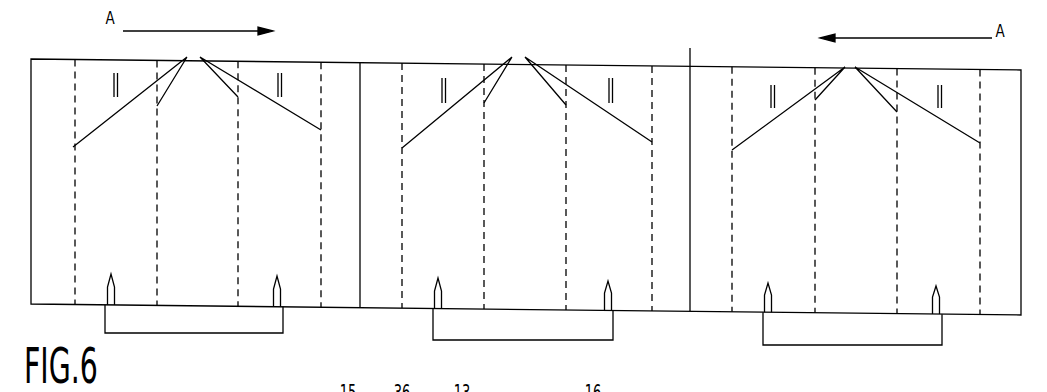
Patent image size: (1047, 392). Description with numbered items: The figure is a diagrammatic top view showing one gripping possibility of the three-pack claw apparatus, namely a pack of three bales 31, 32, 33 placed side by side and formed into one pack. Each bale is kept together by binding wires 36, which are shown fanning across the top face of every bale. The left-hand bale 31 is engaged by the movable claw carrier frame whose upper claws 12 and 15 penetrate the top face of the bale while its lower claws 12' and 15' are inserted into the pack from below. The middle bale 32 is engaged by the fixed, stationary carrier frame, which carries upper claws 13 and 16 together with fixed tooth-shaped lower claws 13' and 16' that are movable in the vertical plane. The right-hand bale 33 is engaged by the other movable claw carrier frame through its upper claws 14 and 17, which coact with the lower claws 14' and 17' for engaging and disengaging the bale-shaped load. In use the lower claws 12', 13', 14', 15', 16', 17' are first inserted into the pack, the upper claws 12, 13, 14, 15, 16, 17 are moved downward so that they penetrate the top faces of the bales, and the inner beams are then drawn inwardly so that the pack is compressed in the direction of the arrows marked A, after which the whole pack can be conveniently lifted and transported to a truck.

The upper claw 12 is at (102, 66).
The upper claw 13 is at (434, 62).
The upper claw 14 is at (782, 62).
The upper claw 15 is at (268, 66).
The upper claw 16 is at (623, 61).
The upper claw 17 is at (954, 77).
The bale 31 is at (183, 197).
The bale 32 is at (510, 205).
The bale 33 is at (842, 204).
The binding wires 36 is at (526, 93).
The lower claw 12' is at (91, 305).
The fixed tooth-shaped lower claw 13' is at (417, 313).
The lower claw 14' is at (745, 318).
The lower claw 15' is at (299, 308).
The fixed tooth-shaped lower claw 16' is at (632, 317).
The lower claw 17' is at (959, 323).